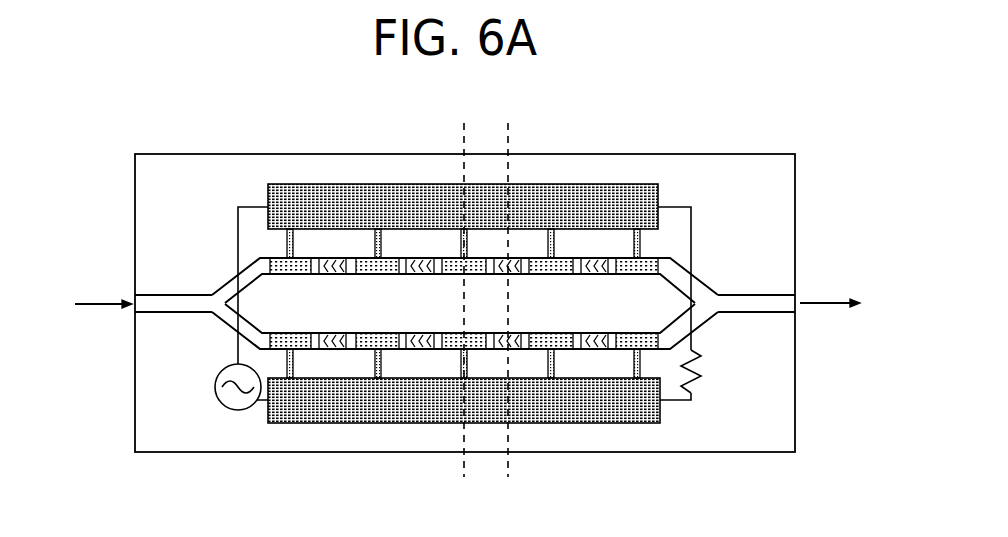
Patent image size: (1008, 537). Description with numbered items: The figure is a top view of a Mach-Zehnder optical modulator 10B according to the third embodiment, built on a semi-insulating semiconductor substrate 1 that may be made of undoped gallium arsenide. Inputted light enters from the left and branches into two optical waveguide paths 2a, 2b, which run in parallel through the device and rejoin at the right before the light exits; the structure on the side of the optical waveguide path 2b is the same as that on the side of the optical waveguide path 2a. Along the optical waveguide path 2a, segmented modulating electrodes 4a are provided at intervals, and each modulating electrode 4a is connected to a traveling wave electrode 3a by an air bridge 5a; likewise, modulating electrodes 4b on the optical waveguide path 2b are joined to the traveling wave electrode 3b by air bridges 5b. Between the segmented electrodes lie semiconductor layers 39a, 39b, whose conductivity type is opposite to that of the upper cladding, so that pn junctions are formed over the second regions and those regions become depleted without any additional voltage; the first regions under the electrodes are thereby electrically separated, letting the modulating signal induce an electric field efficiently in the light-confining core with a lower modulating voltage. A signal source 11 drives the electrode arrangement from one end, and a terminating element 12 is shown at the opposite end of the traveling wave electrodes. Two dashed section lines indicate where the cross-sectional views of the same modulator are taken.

The semi-insulating semiconductor substrate 1 is at (720, 437).
The optical modulator 10B is at (255, 139).
The optical waveguide path 2a is at (255, 273).
The optical waveguide path 2b is at (249, 337).
The traveling wave electrode 3a is at (600, 193).
The traveling wave electrode 3b is at (600, 417).
The modulating electrode 4a is at (448, 257).
The modulating electrode 4b is at (452, 350).
The air bridge 5a is at (462, 249).
The air bridge 5b is at (460, 370).
The semiconductor layer 39a is at (518, 257).
The semiconductor layer 39b is at (513, 350).
The signal source 11 is at (222, 401).
The terminating resistor 12 is at (699, 381).